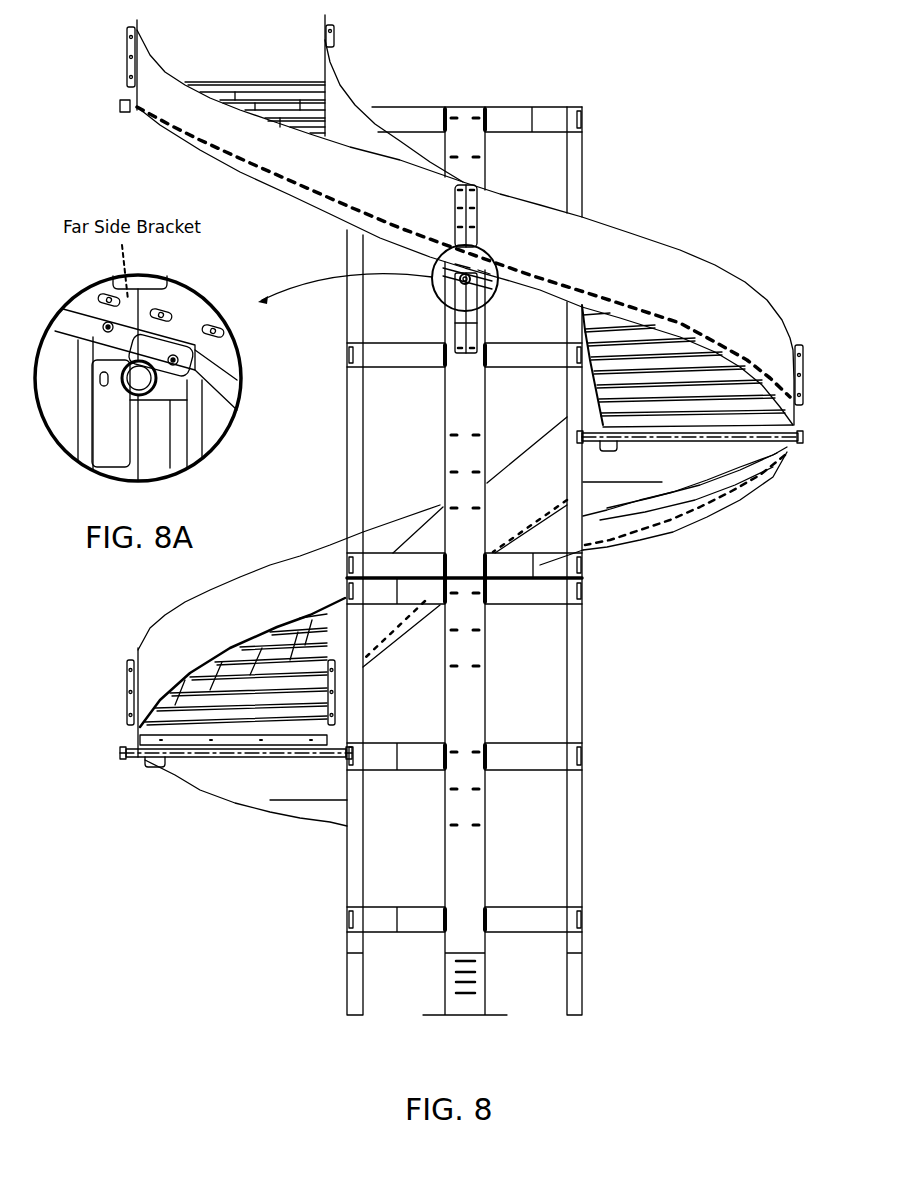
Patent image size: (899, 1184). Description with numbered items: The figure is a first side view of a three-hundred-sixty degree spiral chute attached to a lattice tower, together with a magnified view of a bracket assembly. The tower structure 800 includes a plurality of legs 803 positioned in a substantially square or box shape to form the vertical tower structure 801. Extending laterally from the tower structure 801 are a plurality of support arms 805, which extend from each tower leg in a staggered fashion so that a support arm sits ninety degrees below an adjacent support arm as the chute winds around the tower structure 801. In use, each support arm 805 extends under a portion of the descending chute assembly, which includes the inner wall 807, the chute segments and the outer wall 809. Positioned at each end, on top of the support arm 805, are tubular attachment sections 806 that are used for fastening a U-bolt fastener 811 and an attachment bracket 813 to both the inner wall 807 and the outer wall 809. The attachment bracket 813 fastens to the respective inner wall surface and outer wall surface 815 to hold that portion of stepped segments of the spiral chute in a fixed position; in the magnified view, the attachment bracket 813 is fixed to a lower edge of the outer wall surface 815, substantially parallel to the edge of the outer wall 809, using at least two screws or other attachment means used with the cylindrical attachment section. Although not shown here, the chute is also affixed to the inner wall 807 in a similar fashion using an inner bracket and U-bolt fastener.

In FIG. 8, the tower structure 800 is at (717, 1011).
In FIG. 8, the vertical tower structure 801 is at (662, 725).
In FIG. 8, the legs 803 is at (575, 863).
In FIG. 8, the support arms 805 is at (473, 293).
In FIG. 8A, the support arms 805 is at (160, 435).
In FIG. 8, the tubular attachment sections 806 is at (467, 278).
In FIG. 8A, the tubular attachment sections 806 is at (137, 387).
In FIG. 8, the inner wall 807 is at (355, 123).
In FIG. 8, the outer wall 809 is at (712, 297).
In FIG. 8A, the U-bolt fastener 811 is at (120, 390).
In FIG. 8A, the attachment bracket 813 is at (70, 305).
In FIG. 8, the outer wall surface 815 is at (602, 266).